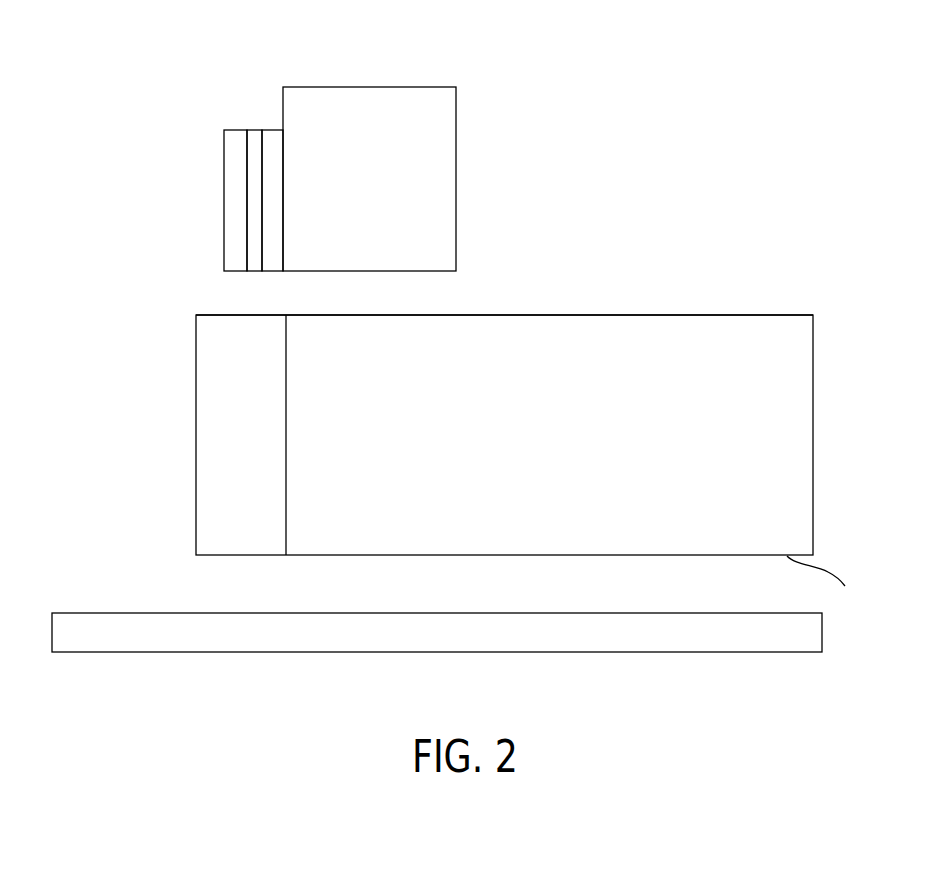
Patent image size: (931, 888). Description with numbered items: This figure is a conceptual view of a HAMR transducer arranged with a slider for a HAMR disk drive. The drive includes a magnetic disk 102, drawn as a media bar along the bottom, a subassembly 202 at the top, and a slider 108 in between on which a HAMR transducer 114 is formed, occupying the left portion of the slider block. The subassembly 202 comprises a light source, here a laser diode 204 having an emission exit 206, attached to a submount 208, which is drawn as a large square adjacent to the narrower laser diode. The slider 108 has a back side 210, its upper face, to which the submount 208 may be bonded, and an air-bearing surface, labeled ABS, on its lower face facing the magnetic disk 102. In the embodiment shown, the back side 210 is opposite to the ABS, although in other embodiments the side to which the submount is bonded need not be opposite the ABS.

The magnetic disk 102 is at (195, 652).
The slider 108 is at (813, 440).
The HAMR transducer 114 is at (196, 404).
The subassembly 202 is at (314, 52).
The laser diode 204 is at (233, 179).
The emission exit 206 is at (254, 264).
The submount 208 is at (447, 180).
The back side 210 is at (762, 313).